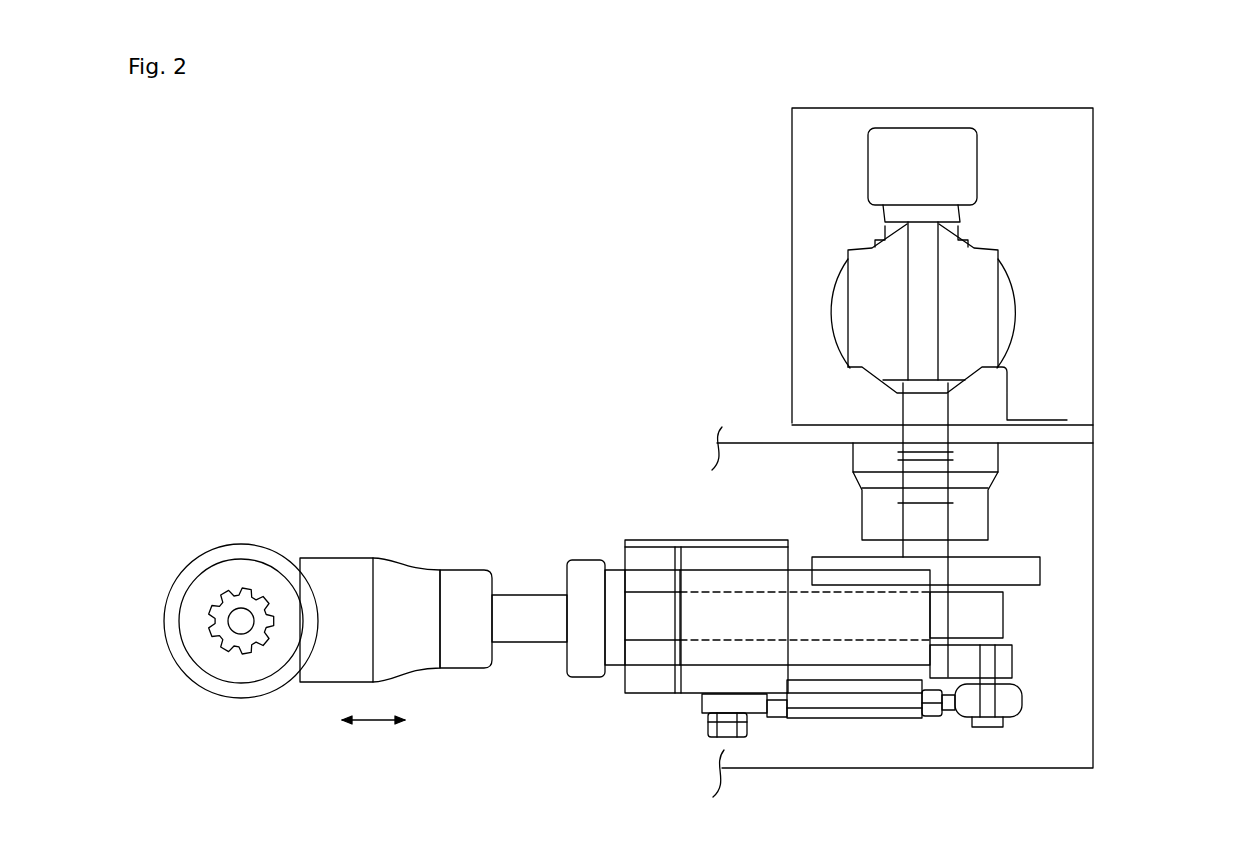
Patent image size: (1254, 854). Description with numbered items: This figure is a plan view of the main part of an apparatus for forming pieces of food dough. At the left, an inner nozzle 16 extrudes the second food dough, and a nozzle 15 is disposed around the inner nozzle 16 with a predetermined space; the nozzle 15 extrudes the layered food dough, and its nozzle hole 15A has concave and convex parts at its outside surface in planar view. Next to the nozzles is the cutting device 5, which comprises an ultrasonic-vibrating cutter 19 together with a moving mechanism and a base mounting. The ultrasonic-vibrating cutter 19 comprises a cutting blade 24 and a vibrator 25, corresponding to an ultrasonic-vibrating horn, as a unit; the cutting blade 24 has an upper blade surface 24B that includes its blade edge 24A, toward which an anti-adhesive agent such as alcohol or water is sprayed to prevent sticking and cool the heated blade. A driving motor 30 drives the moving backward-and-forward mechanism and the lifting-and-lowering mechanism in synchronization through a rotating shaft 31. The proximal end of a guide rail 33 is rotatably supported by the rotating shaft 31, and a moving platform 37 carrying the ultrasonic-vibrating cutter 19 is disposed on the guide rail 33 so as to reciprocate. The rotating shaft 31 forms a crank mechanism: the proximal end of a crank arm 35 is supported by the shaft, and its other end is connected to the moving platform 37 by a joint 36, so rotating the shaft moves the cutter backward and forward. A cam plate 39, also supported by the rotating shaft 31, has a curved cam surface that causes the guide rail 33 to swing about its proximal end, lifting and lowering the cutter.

The cutting device 5 is at (1130, 172).
The nozzle 15 is at (180, 573).
The nozzle hole 15A is at (228, 590).
The inner nozzle 16 is at (229, 630).
The ultrasonic-vibrating cutter 19 is at (658, 522).
The cutting blade 24 is at (467, 585).
The blade edge 24A is at (300, 558).
The upper blade surface 24B is at (347, 570).
The vibrator 25 is at (730, 585).
The driving motor 30 is at (850, 251).
The rotating shaft 31 is at (946, 548).
The guide rail 33 is at (995, 618).
The crank arm 35 is at (1013, 665).
The joint 36 is at (880, 702).
The moving platform 37 is at (655, 678).
The cam plate 39 is at (1034, 572).